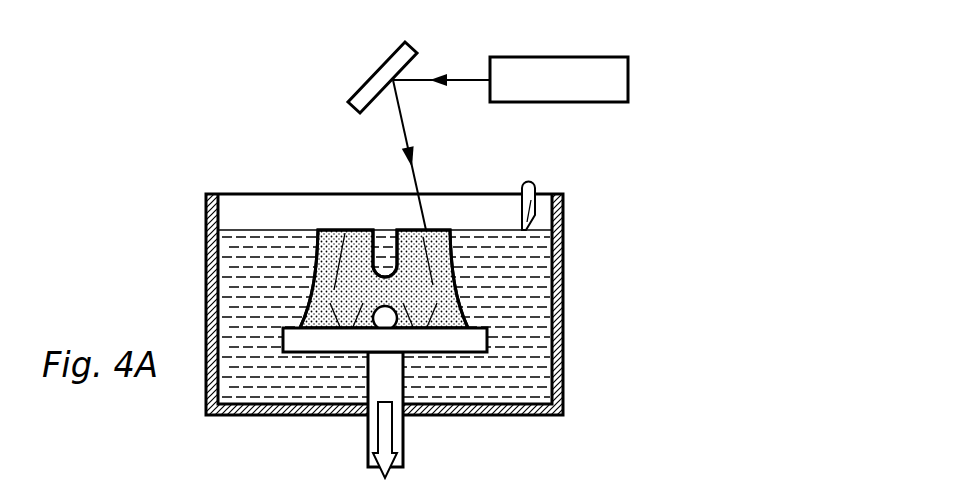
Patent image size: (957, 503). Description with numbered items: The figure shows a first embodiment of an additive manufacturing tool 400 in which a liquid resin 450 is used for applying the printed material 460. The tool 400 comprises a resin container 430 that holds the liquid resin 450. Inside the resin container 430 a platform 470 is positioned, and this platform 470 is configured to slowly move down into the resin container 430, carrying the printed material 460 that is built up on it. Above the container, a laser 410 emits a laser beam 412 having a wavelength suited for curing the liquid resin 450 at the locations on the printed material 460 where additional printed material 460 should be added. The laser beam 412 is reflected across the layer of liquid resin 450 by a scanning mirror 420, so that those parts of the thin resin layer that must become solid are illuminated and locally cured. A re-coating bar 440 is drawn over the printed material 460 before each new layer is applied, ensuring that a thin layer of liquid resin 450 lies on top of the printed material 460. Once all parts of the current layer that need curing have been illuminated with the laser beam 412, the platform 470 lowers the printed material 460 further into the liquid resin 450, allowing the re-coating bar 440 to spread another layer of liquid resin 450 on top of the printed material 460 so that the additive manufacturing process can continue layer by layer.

The additive manufacturing tool 400 is at (182, 112).
The laser 410 is at (563, 72).
The laser beam 412 is at (412, 170).
The scanning mirror 420 is at (380, 78).
The resin container 430 is at (563, 297).
The re-coating bar 440 is at (535, 205).
The liquid resin 450 is at (265, 248).
The printed material 460 is at (345, 233).
The platform 470 is at (478, 343).